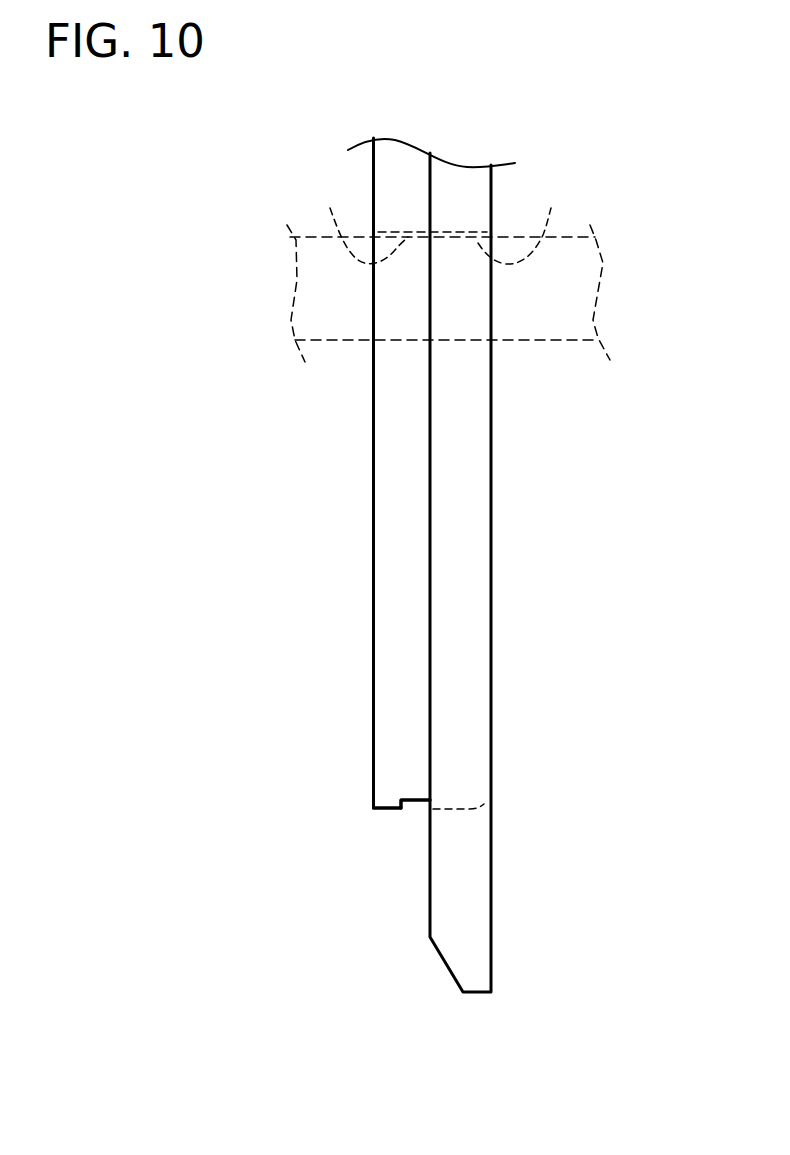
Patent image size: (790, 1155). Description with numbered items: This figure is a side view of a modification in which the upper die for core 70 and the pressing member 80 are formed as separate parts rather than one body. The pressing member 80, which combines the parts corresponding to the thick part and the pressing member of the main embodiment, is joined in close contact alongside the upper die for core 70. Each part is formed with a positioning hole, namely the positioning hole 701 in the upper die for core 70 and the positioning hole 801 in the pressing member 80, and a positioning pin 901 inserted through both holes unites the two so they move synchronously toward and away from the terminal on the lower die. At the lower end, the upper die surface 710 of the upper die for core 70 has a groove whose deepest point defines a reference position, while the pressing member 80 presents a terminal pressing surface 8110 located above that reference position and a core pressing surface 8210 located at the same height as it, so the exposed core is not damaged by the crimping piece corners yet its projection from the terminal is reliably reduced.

The pressing member 80 is at (373, 657).
The core pressing surface 8210 is at (386, 814).
The terminal pressing surface 8110 is at (416, 805).
The upper die for core 70 is at (491, 667).
The upper die surface 710 is at (462, 818).
The positioning hole 801 is at (354, 215).
The positioning hole 701 is at (527, 215).
The positioning pin 901 is at (547, 341).